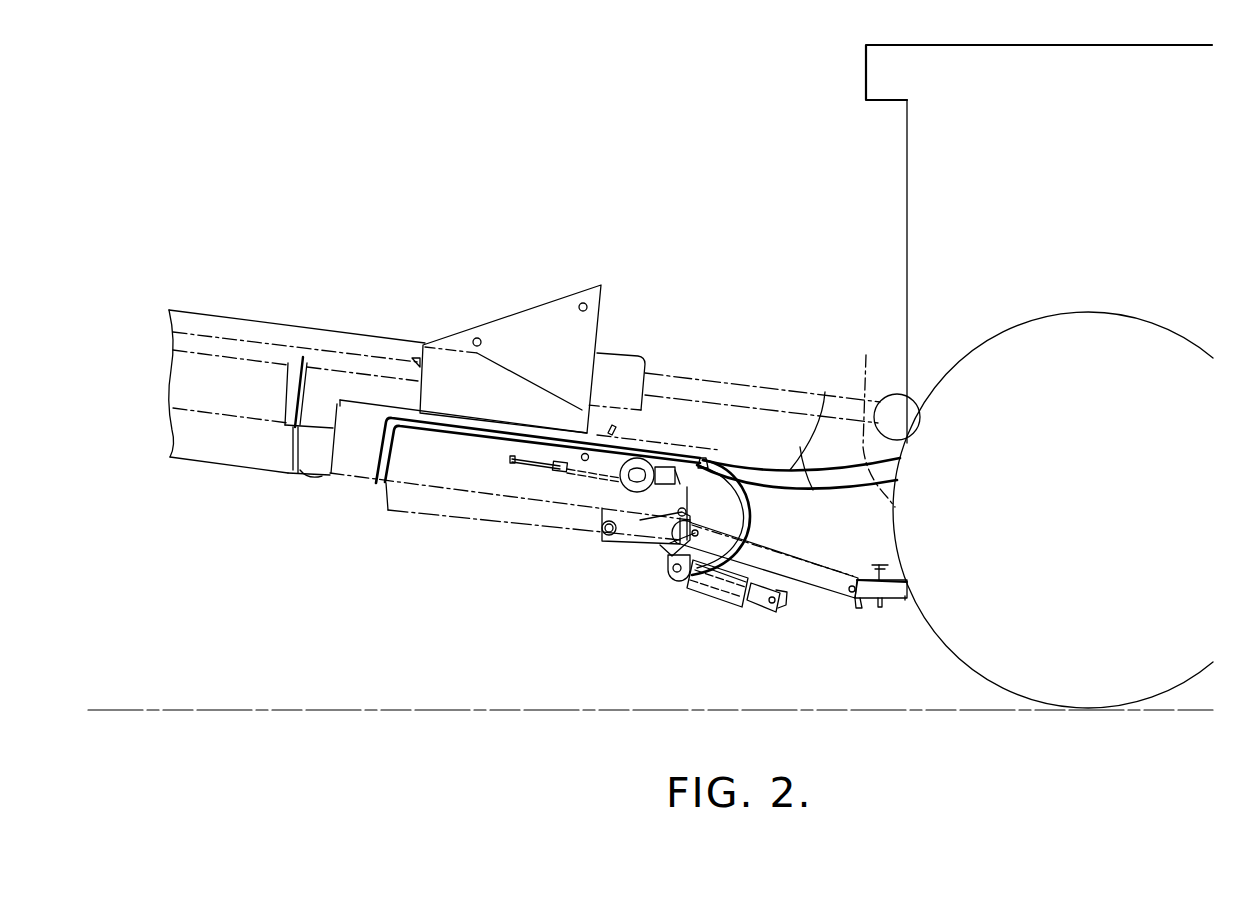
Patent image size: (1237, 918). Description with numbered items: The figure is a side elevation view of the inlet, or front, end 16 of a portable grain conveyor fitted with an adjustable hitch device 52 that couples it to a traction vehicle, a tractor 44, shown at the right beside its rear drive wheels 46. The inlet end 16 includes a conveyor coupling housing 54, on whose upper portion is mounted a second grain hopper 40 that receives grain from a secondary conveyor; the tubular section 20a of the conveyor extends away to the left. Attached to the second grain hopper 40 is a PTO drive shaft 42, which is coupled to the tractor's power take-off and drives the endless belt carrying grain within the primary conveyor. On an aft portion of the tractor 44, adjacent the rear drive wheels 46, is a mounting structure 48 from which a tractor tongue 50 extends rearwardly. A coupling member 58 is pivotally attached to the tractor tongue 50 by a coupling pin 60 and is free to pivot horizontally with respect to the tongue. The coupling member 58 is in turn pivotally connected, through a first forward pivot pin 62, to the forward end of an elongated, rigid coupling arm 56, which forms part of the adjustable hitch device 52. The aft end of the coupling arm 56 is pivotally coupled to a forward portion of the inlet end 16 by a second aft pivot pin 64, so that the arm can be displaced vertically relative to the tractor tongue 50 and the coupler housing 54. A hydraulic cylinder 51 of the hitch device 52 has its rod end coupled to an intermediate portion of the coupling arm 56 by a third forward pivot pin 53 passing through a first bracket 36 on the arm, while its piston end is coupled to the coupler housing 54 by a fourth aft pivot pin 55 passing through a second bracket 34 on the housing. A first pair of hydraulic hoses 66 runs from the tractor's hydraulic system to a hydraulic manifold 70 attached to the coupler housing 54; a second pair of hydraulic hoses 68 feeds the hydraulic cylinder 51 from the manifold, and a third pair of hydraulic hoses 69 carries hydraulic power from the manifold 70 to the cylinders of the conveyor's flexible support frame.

The inlet end 16 is at (427, 527).
The conveyor frame member 20a is at (255, 402).
The second bracket 34 is at (670, 543).
The first bracket 36 is at (787, 594).
The second grain hopper 40 is at (554, 356).
The power take-off (PTO) drive shaft 42 is at (748, 385).
The traction vehicle 44 is at (905, 331).
The rear drive wheels 46 is at (964, 551).
The mounting structure 48 is at (866, 355).
The tractor tongue 50 is at (905, 600).
The hydraulic cylinder 51 is at (720, 588).
The adjustable hitch device 52 is at (743, 617).
The third forward pivot pin 53 is at (773, 614).
The conveyor coupling housing 54 is at (470, 472).
The fourth aft pivot pin 55 is at (677, 575).
The coupling arm 56 is at (810, 553).
The coupling member 58 is at (861, 570).
The coupling pin 60 is at (876, 610).
The first forward pivot pin 62 is at (857, 609).
The second aft pivot pin 64 is at (665, 547).
The first pair of hydraulic hoses 66 is at (825, 392).
The second pair of hydraulic hoses 68 is at (767, 463).
The third pair of hydraulic hoses 69 is at (379, 438).
The hydraulic manifold 70 is at (700, 462).